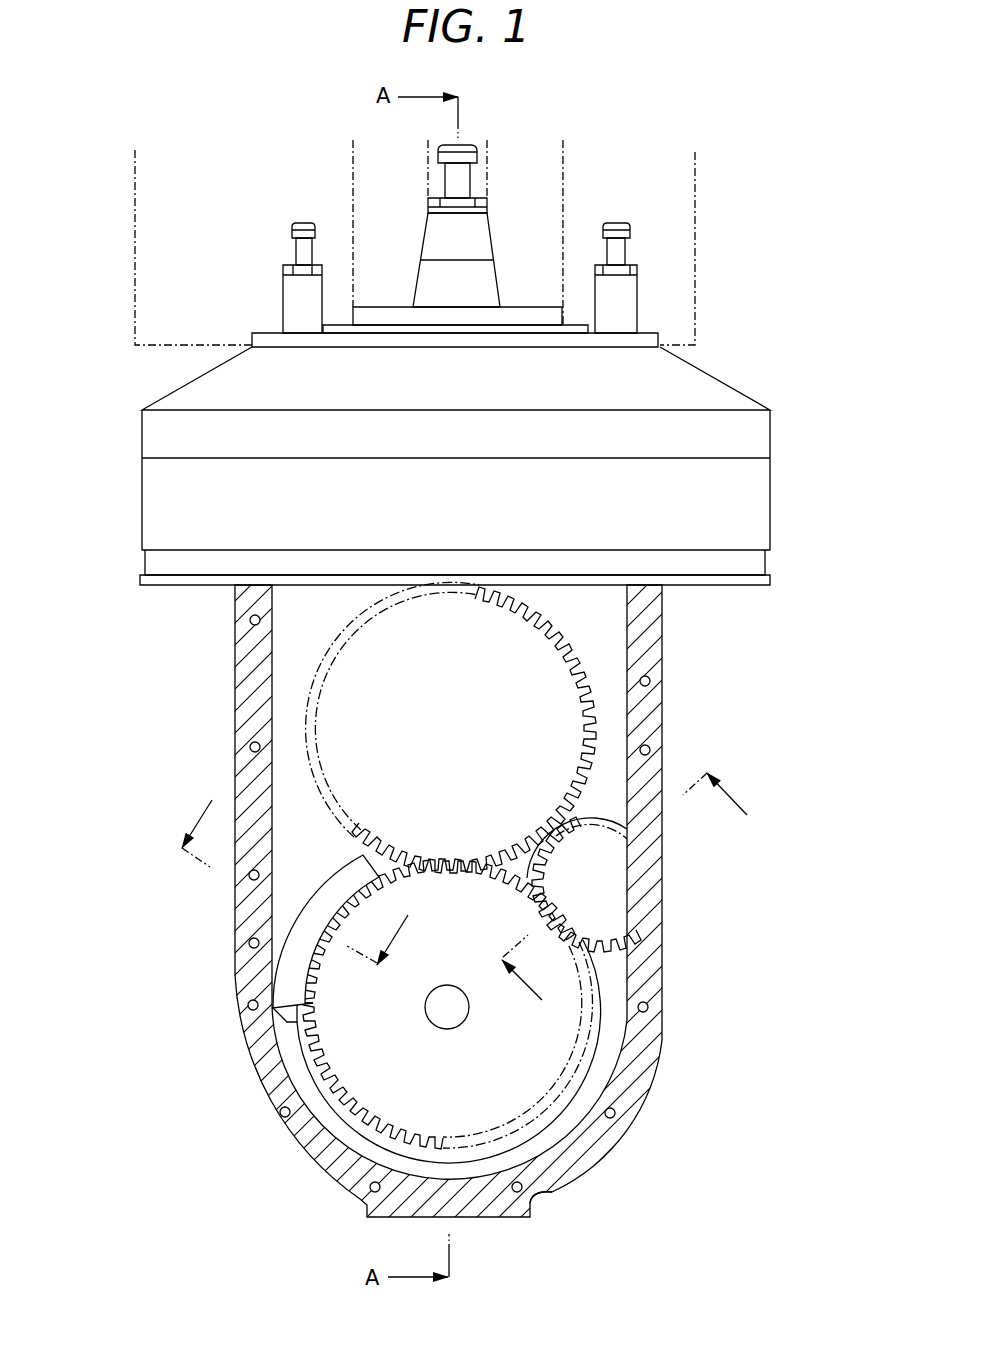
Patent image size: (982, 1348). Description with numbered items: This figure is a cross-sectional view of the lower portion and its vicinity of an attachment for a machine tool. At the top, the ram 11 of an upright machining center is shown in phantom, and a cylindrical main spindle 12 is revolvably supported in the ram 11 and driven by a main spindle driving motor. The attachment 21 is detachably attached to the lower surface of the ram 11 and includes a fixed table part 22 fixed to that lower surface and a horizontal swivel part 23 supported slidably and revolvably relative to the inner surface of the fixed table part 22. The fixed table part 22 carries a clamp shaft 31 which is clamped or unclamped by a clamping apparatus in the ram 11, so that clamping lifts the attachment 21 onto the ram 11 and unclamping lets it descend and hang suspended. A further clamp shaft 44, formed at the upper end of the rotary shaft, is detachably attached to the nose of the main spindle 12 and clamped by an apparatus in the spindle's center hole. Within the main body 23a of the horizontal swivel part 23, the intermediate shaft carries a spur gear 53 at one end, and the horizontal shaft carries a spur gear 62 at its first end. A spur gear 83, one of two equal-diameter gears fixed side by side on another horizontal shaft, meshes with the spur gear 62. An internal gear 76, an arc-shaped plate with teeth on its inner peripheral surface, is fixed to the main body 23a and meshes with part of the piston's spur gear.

The ram 11 is at (697, 196).
The main spindle 12 is at (488, 166).
The attachment 21 is at (424, 908).
The fixed table part 22 is at (753, 435).
The horizontal swivel part 23 is at (630, 1117).
The main body 23a is at (560, 1190).
The clamp shaft 31 is at (292, 230).
The clamp shaft 44 is at (426, 223).
The spur gear 53 is at (577, 647).
The spur gear 62 is at (587, 1037).
The internal gear 76 is at (292, 925).
The spur gear 83 is at (598, 925).